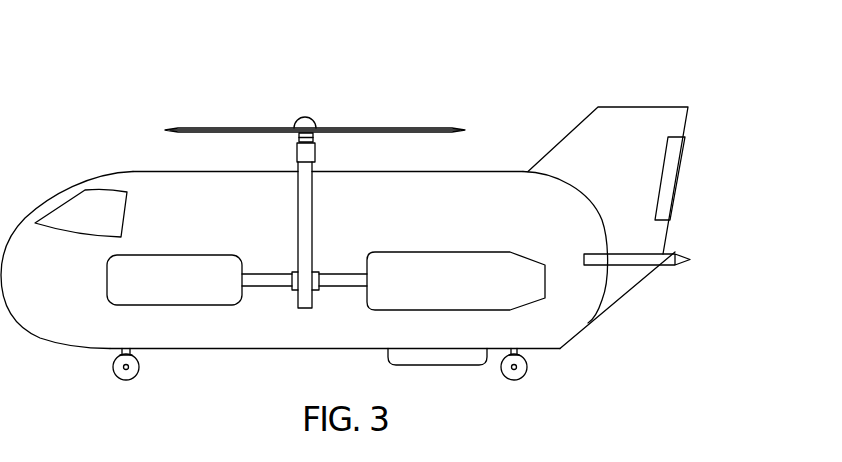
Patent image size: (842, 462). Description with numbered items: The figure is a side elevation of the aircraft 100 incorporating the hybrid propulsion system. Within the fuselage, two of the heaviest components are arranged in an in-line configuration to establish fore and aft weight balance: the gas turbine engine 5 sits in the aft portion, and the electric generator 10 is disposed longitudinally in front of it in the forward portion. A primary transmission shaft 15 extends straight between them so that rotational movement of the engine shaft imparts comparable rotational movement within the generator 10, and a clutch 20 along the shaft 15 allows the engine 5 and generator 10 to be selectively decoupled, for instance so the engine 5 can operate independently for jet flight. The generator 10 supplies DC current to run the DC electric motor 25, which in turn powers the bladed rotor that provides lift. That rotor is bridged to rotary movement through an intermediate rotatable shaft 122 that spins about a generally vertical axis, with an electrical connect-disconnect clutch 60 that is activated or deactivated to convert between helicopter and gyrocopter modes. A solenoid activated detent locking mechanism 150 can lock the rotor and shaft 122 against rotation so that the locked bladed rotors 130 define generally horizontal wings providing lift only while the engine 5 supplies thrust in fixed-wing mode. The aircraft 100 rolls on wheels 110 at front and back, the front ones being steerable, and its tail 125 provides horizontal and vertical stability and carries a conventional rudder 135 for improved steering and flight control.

The aircraft 100 is at (512, 103).
The gas turbine engine 5 is at (449, 258).
The electric generator 10 is at (163, 263).
The primary transmission shaft 15 is at (341, 277).
The clutch 20 is at (314, 291).
The DC electric motor 25 is at (281, 151).
The electrical connect-disconnect clutch 60 is at (298, 136).
The wheels 110 is at (118, 372).
The rotatable shaft 122 is at (298, 201).
The tail 125 is at (681, 255).
The locked bladed rotors 130 is at (306, 116).
The rudder 135 is at (672, 165).
The solenoid activated detent locking mechanism 150 is at (325, 150).